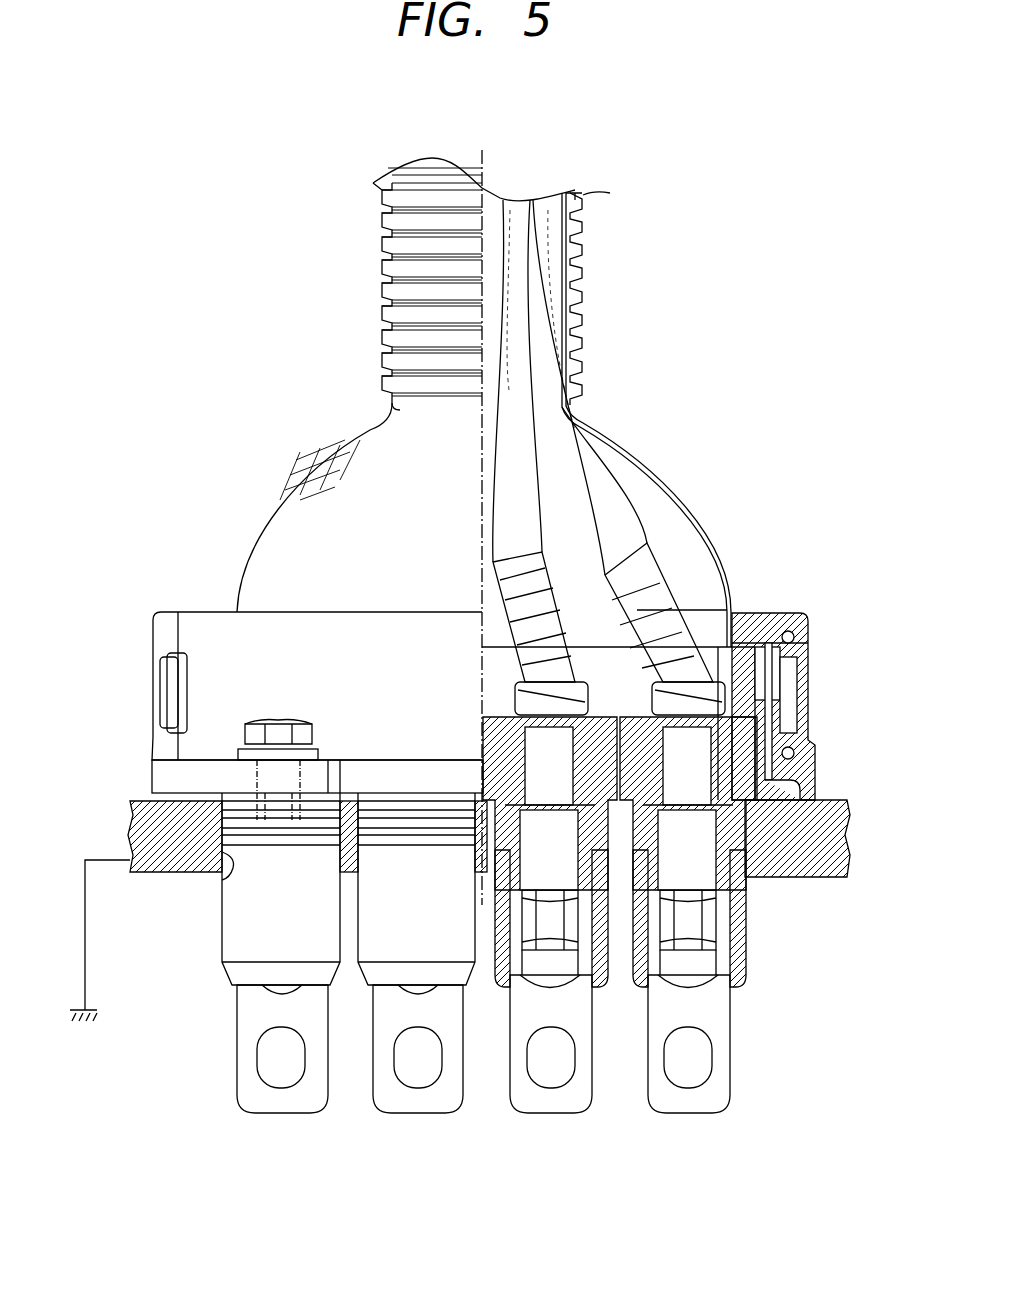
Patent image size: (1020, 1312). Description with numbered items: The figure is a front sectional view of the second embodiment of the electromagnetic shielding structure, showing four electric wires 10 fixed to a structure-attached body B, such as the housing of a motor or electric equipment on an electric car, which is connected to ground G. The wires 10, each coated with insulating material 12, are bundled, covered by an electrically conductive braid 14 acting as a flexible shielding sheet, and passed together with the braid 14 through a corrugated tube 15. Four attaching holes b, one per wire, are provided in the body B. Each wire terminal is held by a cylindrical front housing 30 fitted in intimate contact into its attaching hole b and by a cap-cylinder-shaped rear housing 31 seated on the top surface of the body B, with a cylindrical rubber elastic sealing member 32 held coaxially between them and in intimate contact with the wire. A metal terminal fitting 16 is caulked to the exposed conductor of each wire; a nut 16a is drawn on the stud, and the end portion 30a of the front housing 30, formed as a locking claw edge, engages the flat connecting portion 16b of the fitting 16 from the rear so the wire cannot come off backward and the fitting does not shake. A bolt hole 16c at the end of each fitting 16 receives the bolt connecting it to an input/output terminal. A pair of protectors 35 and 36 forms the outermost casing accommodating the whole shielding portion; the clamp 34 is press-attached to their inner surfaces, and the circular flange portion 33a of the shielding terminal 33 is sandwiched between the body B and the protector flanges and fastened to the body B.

The electric wires 10 is at (524, 477).
The insulating material 12 is at (520, 200).
The electrically conductive braid 14 is at (310, 495).
The corrugated tube 15 is at (383, 296).
The metal terminal fitting 16 is at (540, 1069).
The nut 16a is at (695, 927).
The flat connecting portion 16b is at (722, 1023).
The bolt hole 16c is at (700, 1050).
The front housing 30 is at (378, 905).
The end portion 30a is at (742, 983).
The rear housing 31 is at (775, 745).
The elastic sealing member 32 is at (820, 813).
The shielding terminal 33 is at (790, 672).
The flange portion 33a is at (795, 795).
The clamp 34 is at (790, 640).
The protector 35 is at (197, 616).
The protector 36 is at (775, 615).
The structure-attached body B is at (150, 830).
The attaching hole b is at (232, 872).
The ground G is at (88, 940).